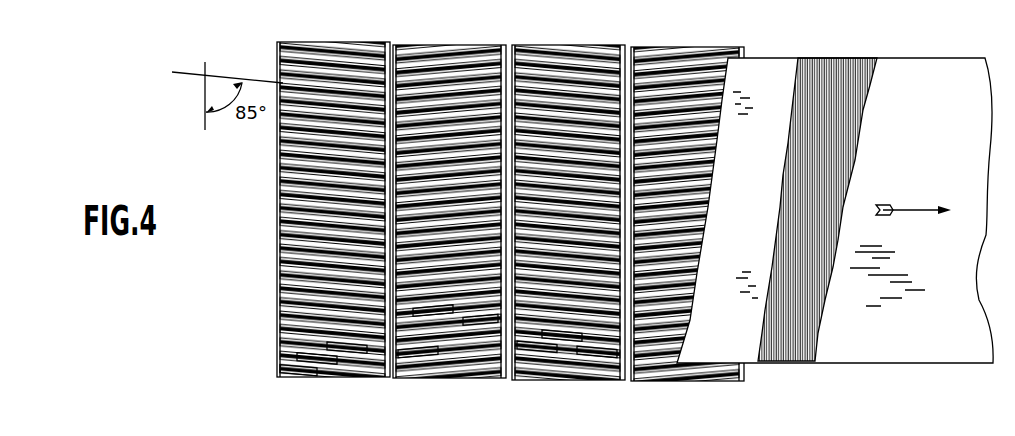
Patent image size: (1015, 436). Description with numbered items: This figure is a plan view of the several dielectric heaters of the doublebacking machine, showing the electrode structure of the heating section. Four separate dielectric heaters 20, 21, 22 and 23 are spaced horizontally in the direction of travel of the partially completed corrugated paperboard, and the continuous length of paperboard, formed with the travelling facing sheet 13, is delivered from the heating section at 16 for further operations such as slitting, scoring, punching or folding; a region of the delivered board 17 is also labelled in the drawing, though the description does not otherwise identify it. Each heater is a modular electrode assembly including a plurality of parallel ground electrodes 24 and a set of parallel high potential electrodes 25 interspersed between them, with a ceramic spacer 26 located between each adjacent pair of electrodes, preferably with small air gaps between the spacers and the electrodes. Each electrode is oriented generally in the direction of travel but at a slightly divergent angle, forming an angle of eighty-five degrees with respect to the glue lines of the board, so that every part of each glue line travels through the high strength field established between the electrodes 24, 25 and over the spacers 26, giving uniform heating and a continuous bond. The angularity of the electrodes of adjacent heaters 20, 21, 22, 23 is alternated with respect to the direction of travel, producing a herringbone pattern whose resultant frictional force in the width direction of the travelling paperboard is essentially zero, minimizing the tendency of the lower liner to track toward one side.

The facing sheet 13 is at (887, 348).
The heating section delivery point 16 is at (758, 55).
The plain region 17 is at (729, 286).
The dielectric heater 20 is at (346, 37).
The dielectric heater 21 is at (467, 37).
The dielectric heater 22 is at (589, 40).
The dielectric heater 23 is at (705, 40).
The ground electrodes 24 is at (290, 367).
The high potential electrodes 25 is at (315, 356).
The ceramic spacers 26 is at (343, 343).